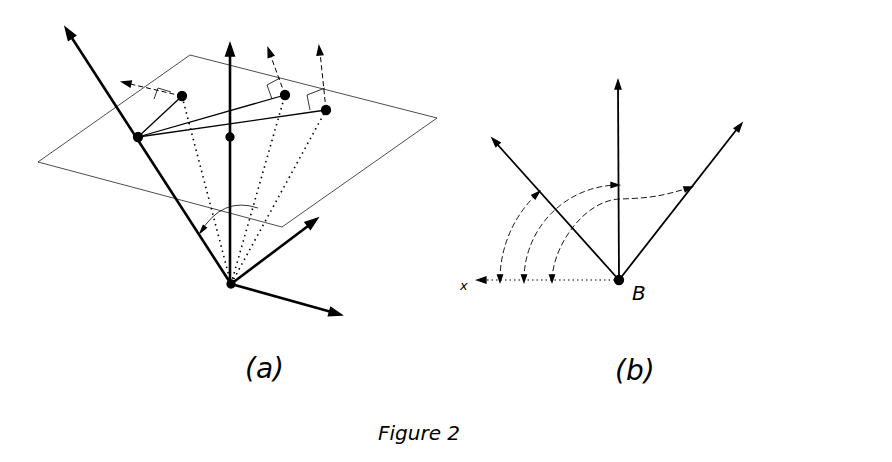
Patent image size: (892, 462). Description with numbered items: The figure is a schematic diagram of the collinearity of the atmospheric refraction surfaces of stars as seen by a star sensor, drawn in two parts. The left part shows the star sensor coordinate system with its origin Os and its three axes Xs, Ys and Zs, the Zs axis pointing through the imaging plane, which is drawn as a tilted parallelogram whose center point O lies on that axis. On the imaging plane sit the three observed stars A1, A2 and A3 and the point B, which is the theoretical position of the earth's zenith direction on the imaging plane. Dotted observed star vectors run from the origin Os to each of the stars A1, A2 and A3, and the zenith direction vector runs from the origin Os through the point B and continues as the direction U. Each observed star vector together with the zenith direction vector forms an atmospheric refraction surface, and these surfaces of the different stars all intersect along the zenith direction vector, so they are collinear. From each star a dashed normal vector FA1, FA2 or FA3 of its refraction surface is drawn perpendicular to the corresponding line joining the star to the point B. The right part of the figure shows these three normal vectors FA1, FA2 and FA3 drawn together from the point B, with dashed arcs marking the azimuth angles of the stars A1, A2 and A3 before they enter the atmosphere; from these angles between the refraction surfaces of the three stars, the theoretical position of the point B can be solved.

The direction vector U is at (140, 155).
The Z axis of sensor coordinate system Zs is at (217, 147).
The Y axis of sensor coordinate system Ys is at (285, 251).
The X axis of sensor coordinate system Xs is at (291, 313).
The origin of the star sensor coordinate system Os is at (214, 295).
The theoretical position of the earth's zenith direction B is at (223, 132).
The point O on plane O is at (239, 140).
The first observed star A1 is at (278, 66).
The second observed star A2 is at (157, 84).
The third observed star A3 is at (333, 85).
The normal vector of the refraction surface of the first star FA1 is at (521, 187).
The normal vector of the refraction surface of the second star FA2 is at (577, 166).
The normal vector of the refraction surface of the third star FA3 is at (658, 185).